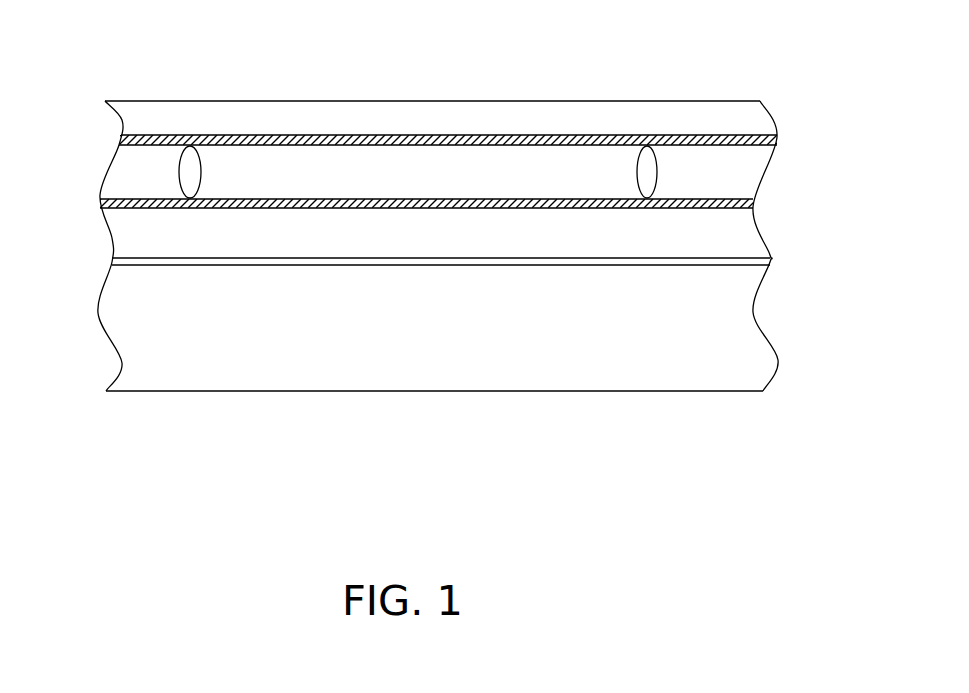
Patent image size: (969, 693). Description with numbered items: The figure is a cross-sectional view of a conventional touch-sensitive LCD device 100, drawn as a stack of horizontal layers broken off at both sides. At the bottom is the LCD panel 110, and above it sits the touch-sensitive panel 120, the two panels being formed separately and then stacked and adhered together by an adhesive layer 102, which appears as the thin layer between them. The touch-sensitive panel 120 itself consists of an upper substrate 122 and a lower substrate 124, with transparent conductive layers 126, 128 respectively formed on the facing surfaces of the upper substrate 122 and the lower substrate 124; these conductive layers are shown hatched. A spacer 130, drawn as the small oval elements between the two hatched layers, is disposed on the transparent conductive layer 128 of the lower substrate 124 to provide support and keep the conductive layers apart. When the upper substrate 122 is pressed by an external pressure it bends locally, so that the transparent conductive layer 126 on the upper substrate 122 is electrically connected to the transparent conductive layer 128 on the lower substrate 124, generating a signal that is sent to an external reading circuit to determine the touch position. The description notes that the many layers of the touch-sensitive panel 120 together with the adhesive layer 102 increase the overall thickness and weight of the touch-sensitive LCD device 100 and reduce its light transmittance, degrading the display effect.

The touch-sensitive LCD device 100 is at (608, 68).
The adhesive layer 102 is at (763, 262).
The LCD panel 110 is at (787, 267).
The touch-sensitive panel 120 is at (787, 101).
The upper substrate 122 is at (123, 115).
The lower substrate 124 is at (120, 237).
The transparent conductive layer 126 is at (122, 140).
The transparent conductive layer 128 is at (107, 205).
The spacer 130 is at (190, 172).